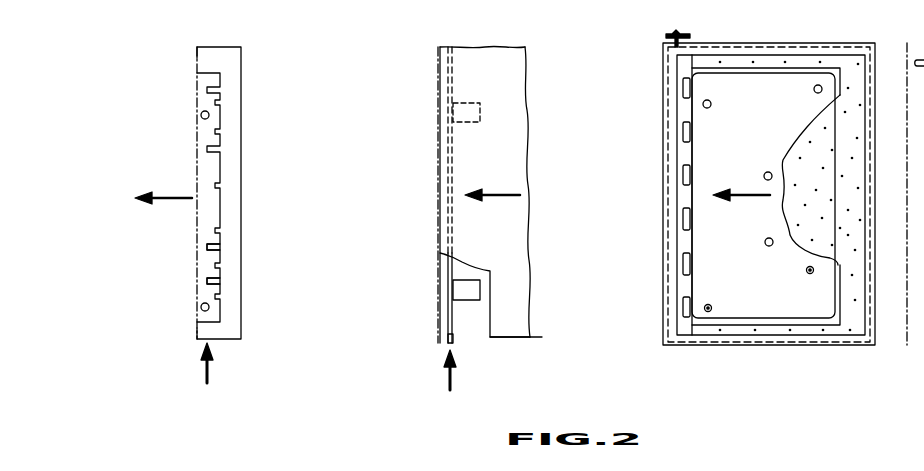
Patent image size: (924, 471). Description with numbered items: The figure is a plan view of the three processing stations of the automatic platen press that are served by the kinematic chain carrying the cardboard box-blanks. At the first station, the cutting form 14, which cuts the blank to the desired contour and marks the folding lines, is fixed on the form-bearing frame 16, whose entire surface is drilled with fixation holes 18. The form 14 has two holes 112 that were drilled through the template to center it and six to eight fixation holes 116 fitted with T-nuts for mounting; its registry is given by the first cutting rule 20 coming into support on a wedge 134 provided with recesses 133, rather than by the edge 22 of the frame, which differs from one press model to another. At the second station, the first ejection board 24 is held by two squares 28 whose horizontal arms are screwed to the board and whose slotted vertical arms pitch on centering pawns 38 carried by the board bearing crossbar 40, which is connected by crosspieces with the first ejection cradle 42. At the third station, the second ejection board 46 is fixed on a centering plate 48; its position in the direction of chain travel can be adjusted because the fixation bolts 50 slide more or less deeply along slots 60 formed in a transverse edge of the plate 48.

The cutting form 14 is at (777, 183).
The form-bearing frame 16 is at (875, 62).
The fixation holes 18 is at (850, 133).
The first cutting rule 20 is at (690, 218).
The edge 22 is at (672, 280).
The first ejection board 24 is at (513, 125).
The squares 28 is at (458, 113).
The centering pawns 38 is at (454, 314).
The board bearing crossbar 40 is at (450, 338).
The first ejection cradle 42 is at (440, 326).
The second ejection board 46 is at (232, 136).
The centering plate 48 is at (207, 176).
The fixation bolts 50 is at (201, 115).
The slots 60 is at (208, 280).
The holes 112 is at (708, 311).
The fixation holes 116 is at (812, 271).
The recesses 133 is at (687, 84).
The wedge 134 is at (687, 148).